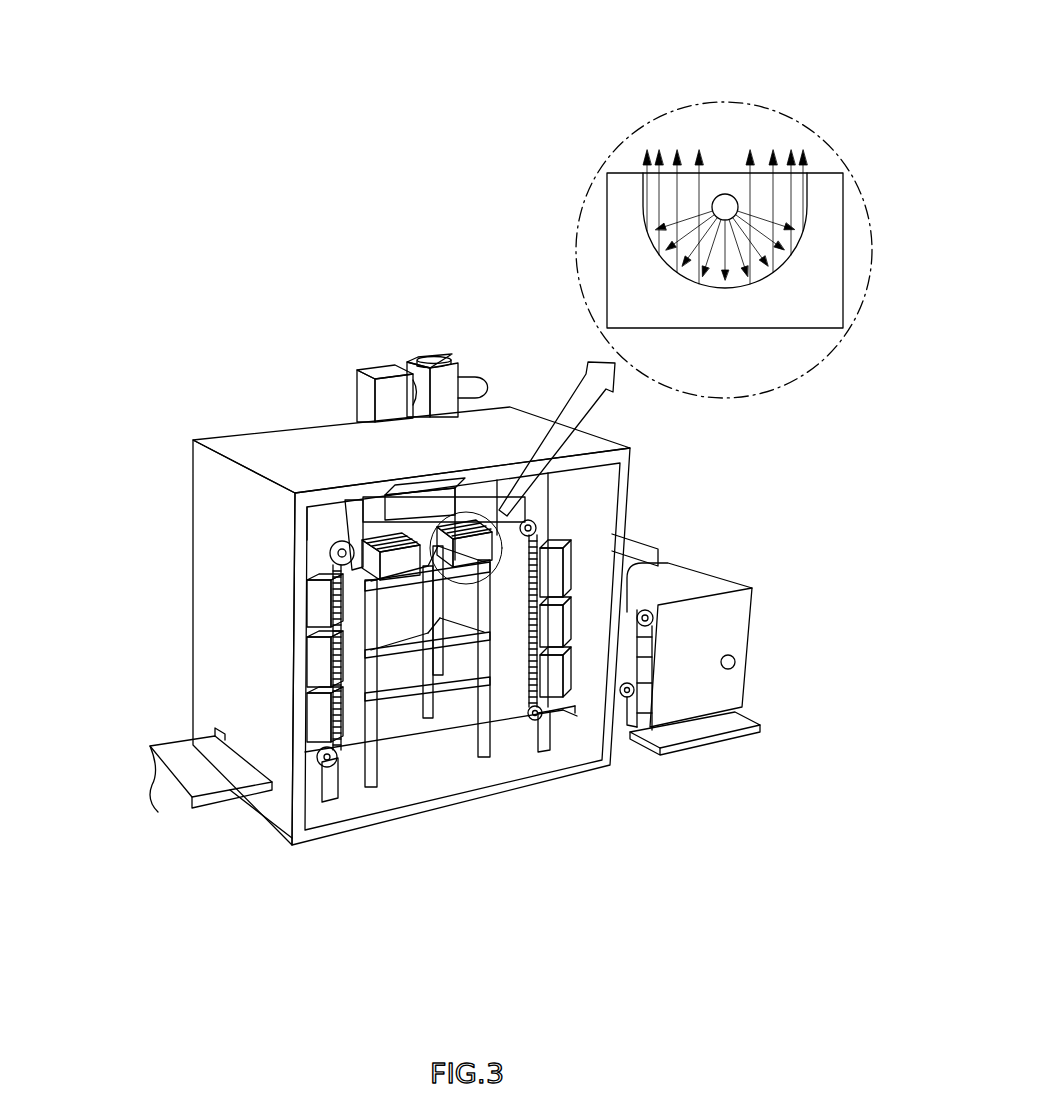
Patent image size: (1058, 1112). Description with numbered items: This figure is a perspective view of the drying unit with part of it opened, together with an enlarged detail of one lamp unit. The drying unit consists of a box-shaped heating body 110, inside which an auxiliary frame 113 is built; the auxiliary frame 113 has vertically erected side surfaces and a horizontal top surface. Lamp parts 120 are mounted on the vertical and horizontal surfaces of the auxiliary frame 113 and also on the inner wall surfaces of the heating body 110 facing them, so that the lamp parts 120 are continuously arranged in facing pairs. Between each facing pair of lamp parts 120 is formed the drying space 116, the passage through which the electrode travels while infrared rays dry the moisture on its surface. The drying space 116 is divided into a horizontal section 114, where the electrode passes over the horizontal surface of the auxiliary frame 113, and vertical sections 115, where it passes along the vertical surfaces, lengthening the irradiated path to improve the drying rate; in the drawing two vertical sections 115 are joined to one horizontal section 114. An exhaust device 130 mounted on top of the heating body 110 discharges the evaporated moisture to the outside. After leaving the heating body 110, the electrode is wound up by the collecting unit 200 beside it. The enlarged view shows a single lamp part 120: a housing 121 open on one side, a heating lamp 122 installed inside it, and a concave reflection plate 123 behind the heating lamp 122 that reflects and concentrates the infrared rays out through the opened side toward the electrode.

The heating body 110 is at (267, 448).
The auxiliary frame 113 is at (477, 757).
The horizontal section 114 is at (364, 527).
The vertical section 115 is at (328, 674).
The drying space 116 is at (85, 547).
The lamp part 120 is at (682, 418).
The housing 121 is at (843, 248).
The heating lamp 122 is at (722, 194).
The reflection plate 123 is at (810, 187).
The exhaust device 130 is at (378, 372).
The collecting unit 200 is at (715, 544).